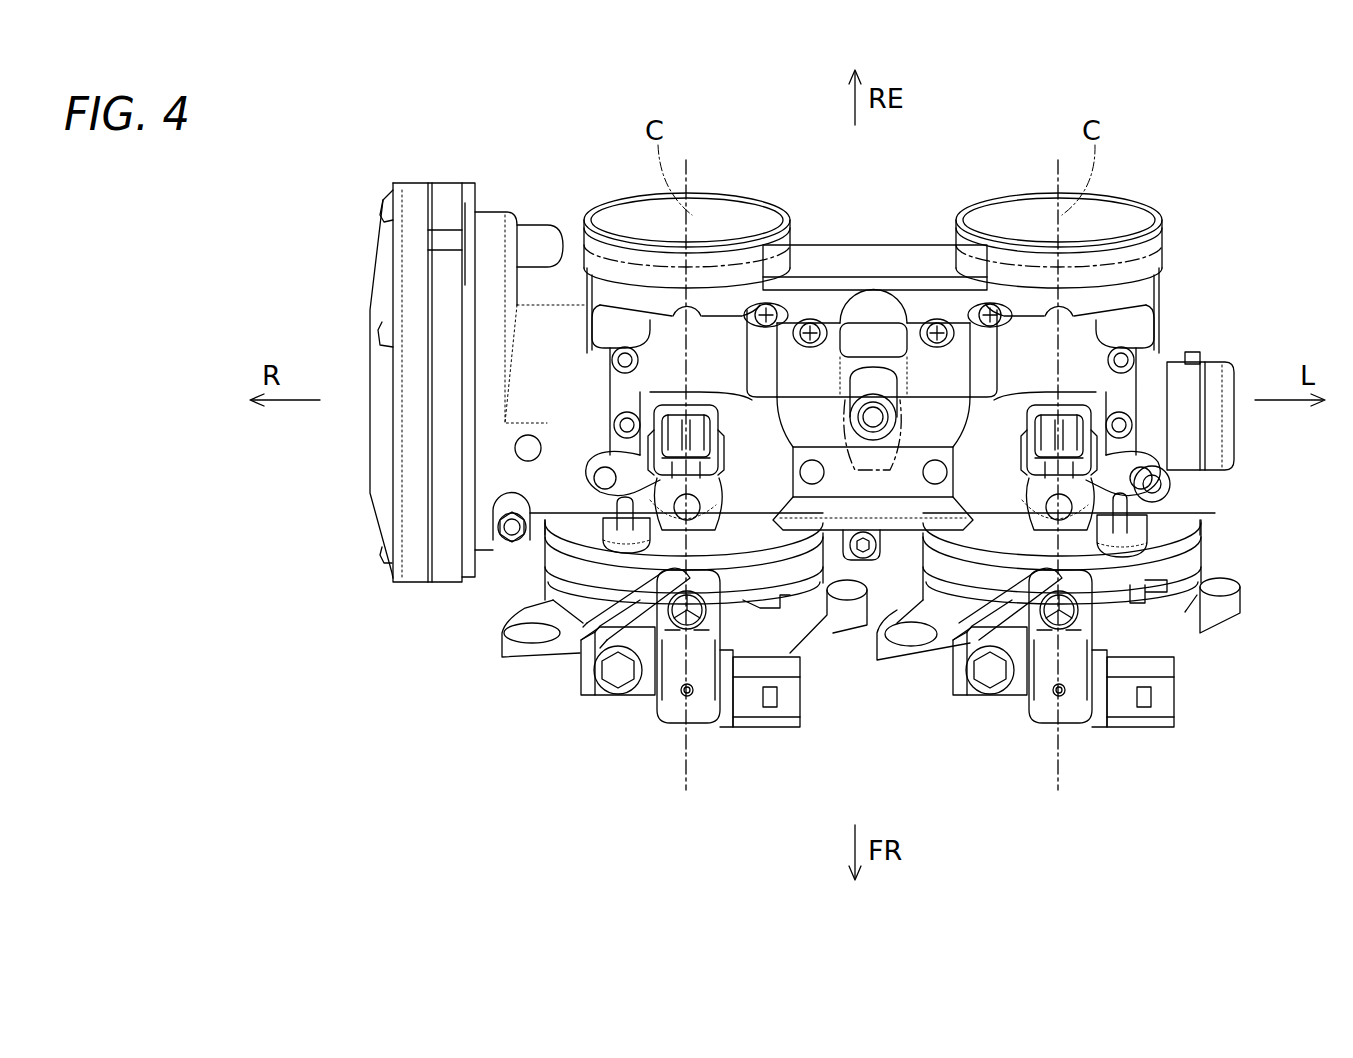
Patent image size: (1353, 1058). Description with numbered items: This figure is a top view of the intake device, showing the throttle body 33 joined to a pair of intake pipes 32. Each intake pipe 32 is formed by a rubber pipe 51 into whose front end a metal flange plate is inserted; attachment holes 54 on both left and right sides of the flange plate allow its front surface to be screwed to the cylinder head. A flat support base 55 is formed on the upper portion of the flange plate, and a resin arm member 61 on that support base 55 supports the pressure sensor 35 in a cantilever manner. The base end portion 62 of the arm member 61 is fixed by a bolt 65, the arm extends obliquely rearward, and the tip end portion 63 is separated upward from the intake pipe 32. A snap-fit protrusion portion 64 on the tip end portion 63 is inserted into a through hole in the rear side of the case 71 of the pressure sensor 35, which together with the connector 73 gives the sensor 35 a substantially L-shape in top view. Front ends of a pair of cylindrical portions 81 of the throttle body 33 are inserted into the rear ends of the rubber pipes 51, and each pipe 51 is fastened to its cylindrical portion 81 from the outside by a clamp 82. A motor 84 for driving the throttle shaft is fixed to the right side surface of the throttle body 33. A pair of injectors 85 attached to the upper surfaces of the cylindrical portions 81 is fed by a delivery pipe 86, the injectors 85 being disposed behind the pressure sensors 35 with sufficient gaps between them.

The intake pipe 32 is at (497, 665).
The throttle body 33 is at (1178, 193).
The pressure sensor 35 is at (735, 760).
The pipe 51 is at (548, 588).
The attachment hole 54 is at (500, 642).
The support base 55 is at (585, 695).
The arm member 61 is at (633, 695).
The base end portion 62 is at (615, 672).
The tip end portion 63 is at (722, 522).
The protrusion portion 64 is at (700, 568).
The bolt 65 is at (615, 695).
The case 71 is at (695, 725).
The connector 73 is at (800, 730).
The cylindrical portion 81 is at (592, 282).
The clamp 82 is at (546, 545).
The motor 84 is at (410, 190).
The injector 85 is at (612, 425).
The delivery pipe 86 is at (940, 325).